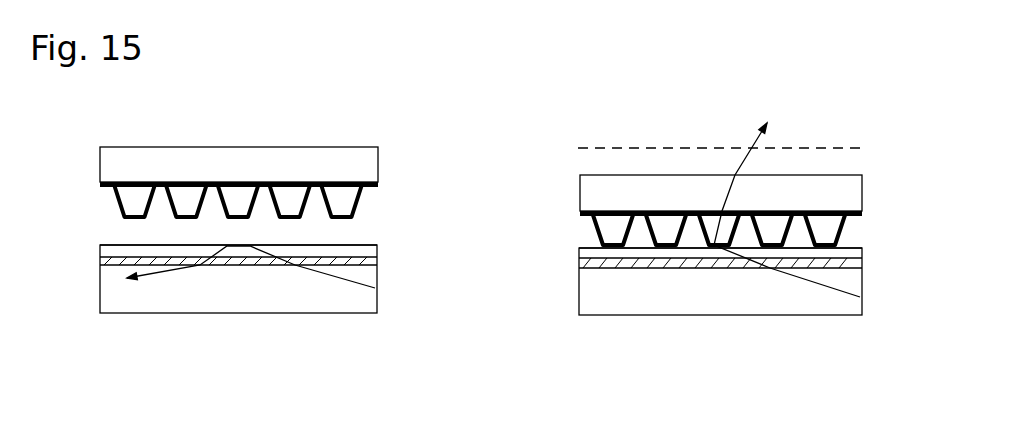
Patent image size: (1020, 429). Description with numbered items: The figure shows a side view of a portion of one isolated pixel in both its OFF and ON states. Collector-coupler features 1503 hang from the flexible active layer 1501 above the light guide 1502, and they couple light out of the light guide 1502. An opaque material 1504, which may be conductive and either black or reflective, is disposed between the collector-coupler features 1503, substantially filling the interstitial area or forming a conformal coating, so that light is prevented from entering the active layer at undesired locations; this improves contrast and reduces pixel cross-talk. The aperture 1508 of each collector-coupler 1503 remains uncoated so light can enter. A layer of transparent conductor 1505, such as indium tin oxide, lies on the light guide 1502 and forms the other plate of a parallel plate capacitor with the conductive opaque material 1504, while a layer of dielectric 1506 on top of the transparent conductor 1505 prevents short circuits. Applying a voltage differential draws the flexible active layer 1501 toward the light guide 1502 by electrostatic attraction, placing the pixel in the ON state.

The flexible active layer 1501 is at (197, 146).
The light guide 1502 is at (192, 313).
The collector-coupler features 1503 is at (132, 198).
The opaque material 1504 is at (363, 200).
The transparent conductor 1505 is at (377, 260).
The dielectric 1506 is at (363, 244).
The aperture 1508 is at (127, 218).